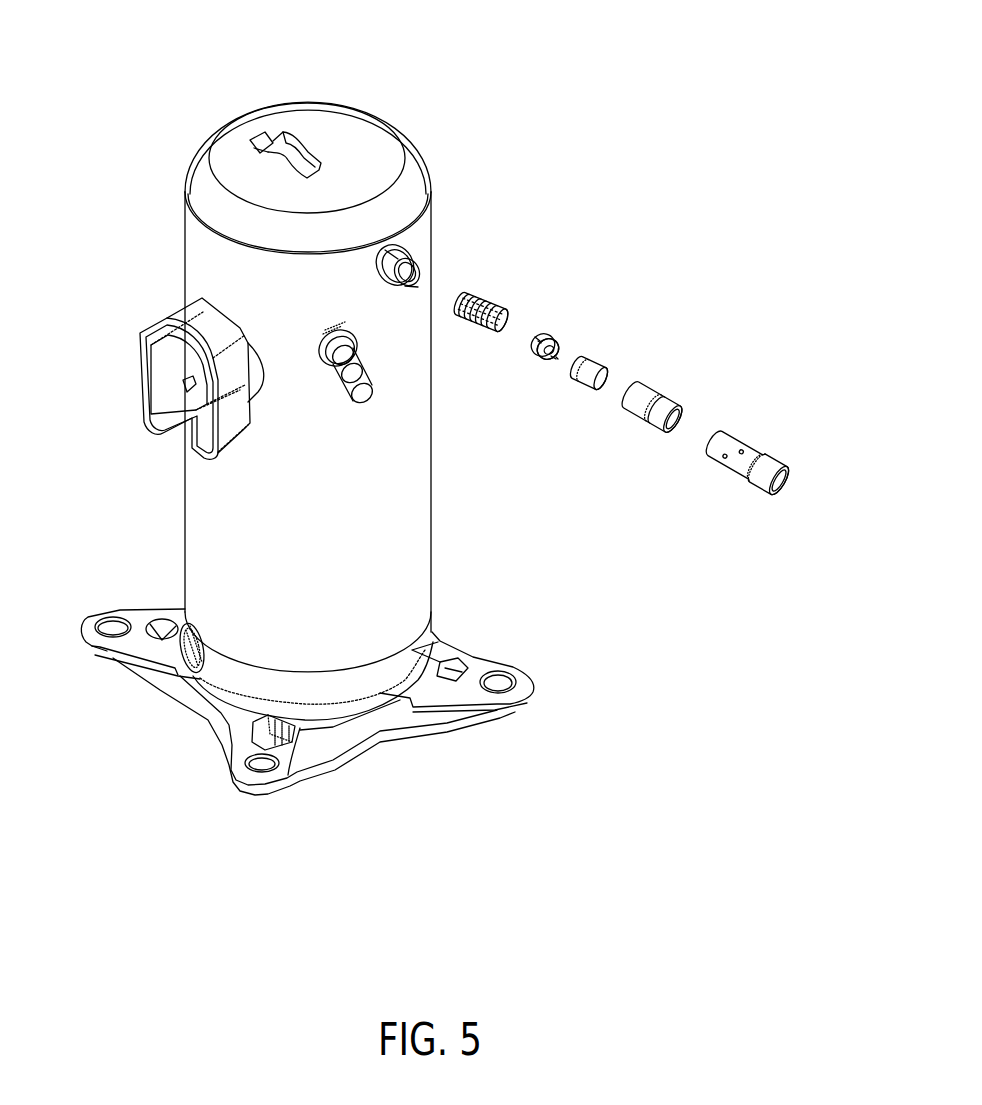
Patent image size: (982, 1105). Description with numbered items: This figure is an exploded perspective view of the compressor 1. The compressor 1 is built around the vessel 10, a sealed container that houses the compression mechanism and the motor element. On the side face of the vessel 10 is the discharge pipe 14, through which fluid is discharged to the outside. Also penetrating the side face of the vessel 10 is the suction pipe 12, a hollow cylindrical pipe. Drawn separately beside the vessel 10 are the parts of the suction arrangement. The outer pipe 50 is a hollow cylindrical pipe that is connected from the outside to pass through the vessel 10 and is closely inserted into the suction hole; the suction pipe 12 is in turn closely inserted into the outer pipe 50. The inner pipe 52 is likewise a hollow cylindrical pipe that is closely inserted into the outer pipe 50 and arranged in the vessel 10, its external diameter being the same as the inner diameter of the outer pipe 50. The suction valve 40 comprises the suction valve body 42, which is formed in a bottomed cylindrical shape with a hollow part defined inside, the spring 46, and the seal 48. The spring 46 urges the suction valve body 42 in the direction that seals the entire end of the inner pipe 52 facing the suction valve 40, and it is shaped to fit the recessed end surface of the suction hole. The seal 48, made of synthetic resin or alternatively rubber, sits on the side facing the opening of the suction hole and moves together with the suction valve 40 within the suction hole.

The compressor 1 is at (548, 139).
The vessel 10 is at (220, 540).
The suction pipe 12 is at (730, 465).
The discharge pipe 14 is at (362, 367).
The suction valve 40 is at (637, 302).
The suction valve body 42 is at (542, 337).
The spring 46 is at (490, 302).
The seal 48 is at (562, 347).
The outer pipe 50 is at (643, 417).
The inner pipe 52 is at (575, 387).